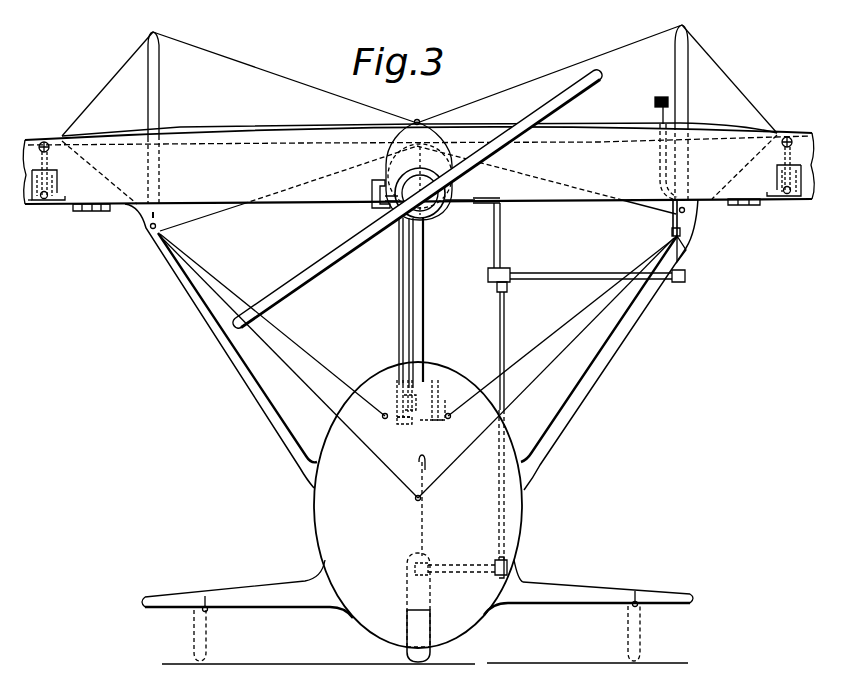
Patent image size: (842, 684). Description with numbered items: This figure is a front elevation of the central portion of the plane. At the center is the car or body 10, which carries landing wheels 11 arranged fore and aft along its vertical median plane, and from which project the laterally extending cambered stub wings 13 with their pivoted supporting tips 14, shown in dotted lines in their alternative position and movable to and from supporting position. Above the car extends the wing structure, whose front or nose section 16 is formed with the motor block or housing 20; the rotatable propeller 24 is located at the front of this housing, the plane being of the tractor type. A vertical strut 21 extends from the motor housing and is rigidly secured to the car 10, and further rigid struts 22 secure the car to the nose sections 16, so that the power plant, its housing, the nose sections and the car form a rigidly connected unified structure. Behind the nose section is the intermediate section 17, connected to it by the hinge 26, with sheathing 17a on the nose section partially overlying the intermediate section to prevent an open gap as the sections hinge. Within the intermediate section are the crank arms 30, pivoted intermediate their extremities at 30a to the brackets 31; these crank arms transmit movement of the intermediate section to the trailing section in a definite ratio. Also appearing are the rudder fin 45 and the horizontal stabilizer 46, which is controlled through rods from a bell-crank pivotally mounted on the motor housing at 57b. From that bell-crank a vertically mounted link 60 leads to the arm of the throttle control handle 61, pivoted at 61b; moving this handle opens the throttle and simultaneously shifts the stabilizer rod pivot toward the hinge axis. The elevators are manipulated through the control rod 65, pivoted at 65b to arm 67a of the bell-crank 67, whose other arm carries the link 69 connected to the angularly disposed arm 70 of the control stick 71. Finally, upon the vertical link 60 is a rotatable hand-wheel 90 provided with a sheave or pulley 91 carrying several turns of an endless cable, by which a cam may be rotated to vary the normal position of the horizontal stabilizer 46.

The car or body 10 is at (528, 522).
The landing wheels 11 is at (432, 653).
The cambered stub wings 13 is at (262, 594).
The pivoted supporting tips 14 is at (168, 592).
The nose section 16 is at (247, 190).
The intermediate section 17 is at (207, 630).
The sheathing 17a is at (425, 673).
The motor block or housing 20 is at (427, 226).
The vertical strut 21 is at (425, 310).
The strut 22 is at (265, 398).
The propeller 24 is at (300, 268).
The hinge 26 is at (92, 212).
The crank arms 30 is at (47, 141).
The pivot of crank arms 30a is at (58, 176).
The brackets 31 is at (62, 210).
The rudder fin 45 is at (686, 72).
The horizontal stabilizer 46 is at (291, 128).
The pivot of bell-crank 57b is at (433, 214).
The vertical link 60 is at (399, 282).
The throttle control handle 61 is at (448, 380).
The pivot of throttle control handle 61b is at (445, 428).
The control rod 65 is at (655, 103).
The pivot of control rod to bell-crank arm 65b is at (690, 232).
The bell-crank 67 is at (686, 278).
The arm of bell-crank 67a is at (690, 247).
The link 69 is at (507, 318).
The angularly disposed arm 70 is at (512, 560).
The control stick 71 is at (427, 467).
The hand-wheel 90 is at (396, 381).
The sheave or pulley 91 is at (416, 425).